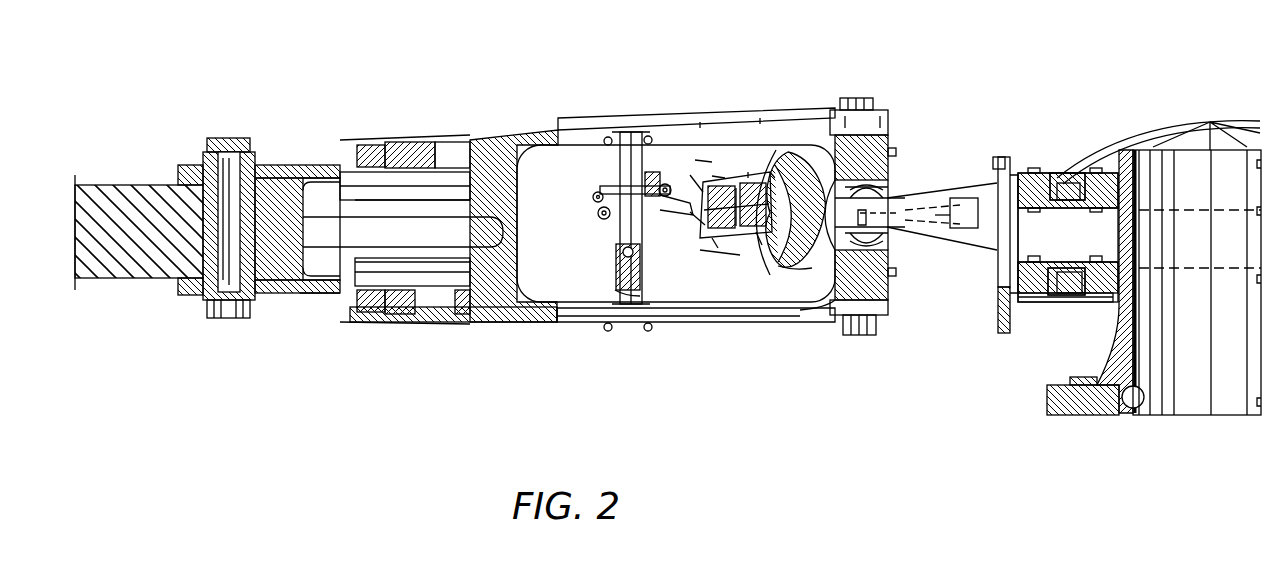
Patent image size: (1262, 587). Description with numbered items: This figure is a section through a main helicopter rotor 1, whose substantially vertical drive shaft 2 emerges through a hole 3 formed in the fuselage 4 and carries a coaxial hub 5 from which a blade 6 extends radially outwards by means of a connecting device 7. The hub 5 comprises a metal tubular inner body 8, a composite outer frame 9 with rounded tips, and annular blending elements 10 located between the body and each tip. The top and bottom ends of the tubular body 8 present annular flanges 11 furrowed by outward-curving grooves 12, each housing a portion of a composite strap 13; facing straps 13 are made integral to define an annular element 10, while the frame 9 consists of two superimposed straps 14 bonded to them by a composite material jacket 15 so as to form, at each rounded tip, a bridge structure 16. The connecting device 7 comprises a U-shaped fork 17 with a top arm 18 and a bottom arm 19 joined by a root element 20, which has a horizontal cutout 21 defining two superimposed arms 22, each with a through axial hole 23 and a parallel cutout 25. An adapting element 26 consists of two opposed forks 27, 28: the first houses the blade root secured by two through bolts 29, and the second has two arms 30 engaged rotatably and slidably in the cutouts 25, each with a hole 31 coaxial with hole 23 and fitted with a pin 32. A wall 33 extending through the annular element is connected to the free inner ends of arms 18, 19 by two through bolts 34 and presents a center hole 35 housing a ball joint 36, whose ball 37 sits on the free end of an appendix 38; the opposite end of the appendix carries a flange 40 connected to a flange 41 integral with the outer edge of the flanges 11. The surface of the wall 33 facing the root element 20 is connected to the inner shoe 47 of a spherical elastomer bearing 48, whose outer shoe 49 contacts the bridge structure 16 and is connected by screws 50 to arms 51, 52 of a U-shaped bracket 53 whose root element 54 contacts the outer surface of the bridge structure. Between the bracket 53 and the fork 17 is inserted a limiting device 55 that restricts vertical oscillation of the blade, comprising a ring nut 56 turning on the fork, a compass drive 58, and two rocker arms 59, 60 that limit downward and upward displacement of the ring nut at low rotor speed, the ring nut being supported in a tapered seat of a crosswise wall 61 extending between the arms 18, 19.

The main helicopter rotor 1 is at (915, 71).
The drive shaft 2 is at (1186, 395).
The hole 3 is at (1131, 409).
The fuselage 4 is at (1065, 416).
The hub 5 is at (973, 148).
The blade 6 is at (138, 262).
The connecting device 7 is at (506, 324).
The tubular inner body 8 is at (1113, 228).
The outer frame 9 is at (716, 181).
The annular blending element 10 is at (742, 240).
The annular flange 11 is at (1036, 172).
The groove 12 is at (1075, 193).
The strap 13 is at (1065, 190).
The strap 14 is at (702, 190).
The composite material jacket 15 is at (692, 216).
The bridge structure 16 is at (722, 262).
The fork 17 is at (538, 324).
The top arm 18 is at (548, 127).
The bottom arm 19 is at (826, 313).
The root element 20 is at (505, 140).
The cutout 21 is at (498, 232).
The arm 22 is at (366, 158).
The through axial hole 23 is at (408, 152).
The cutout 25 is at (470, 160).
The adapting element 26 is at (313, 152).
The fork 27 is at (186, 298).
The fork 28 is at (331, 296).
The through bolt 29 is at (228, 319).
The arm 30 is at (416, 188).
The hole 31 is at (378, 222).
The pin 32 is at (430, 320).
The wall 33 is at (888, 145).
The through bolt 34 is at (858, 97).
The center hole 35 is at (890, 183).
The ball joint 36 is at (892, 205).
The ball 37 is at (858, 336).
The appendix 38 is at (902, 236).
The flange 40 is at (1003, 334).
The flange 41 is at (1003, 156).
The inner shoe 47 is at (806, 162).
The spherical elastomer bearing 48 is at (812, 272).
The outer shoe 49 is at (790, 160).
The screw 50 is at (776, 178).
The arm 51 is at (750, 180).
The arm 52 is at (718, 242).
The U-shaped bracket 53 is at (720, 180).
The root element 54 is at (690, 205).
The limiting device 55 is at (600, 228).
The ring nut 56 is at (615, 232).
The compass drive 58 is at (598, 187).
The rocker arm 59 is at (702, 162).
The rocker arm 60 is at (618, 250).
The crosswise wall 61 is at (620, 287).